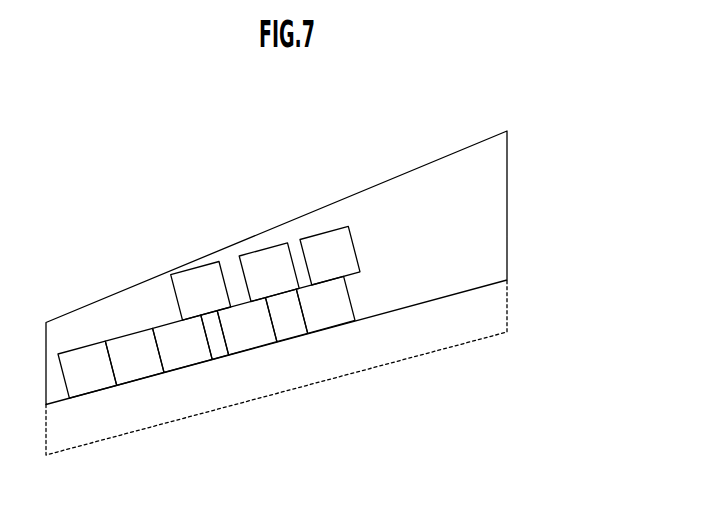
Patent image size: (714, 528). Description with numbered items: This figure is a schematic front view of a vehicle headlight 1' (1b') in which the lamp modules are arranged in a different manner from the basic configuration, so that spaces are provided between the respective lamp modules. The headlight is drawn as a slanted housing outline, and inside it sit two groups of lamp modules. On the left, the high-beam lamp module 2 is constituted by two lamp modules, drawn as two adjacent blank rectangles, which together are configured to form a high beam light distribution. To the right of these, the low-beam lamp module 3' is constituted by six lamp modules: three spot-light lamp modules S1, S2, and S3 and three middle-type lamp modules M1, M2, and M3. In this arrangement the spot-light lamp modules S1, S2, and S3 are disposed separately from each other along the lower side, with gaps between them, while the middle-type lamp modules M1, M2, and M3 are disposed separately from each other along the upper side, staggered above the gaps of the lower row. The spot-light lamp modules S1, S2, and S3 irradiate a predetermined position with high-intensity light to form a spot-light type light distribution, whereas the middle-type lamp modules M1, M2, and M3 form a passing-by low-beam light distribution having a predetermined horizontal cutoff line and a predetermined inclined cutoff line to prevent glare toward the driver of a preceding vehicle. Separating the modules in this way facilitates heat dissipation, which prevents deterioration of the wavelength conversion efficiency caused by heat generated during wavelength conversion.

The vehicle headlight 1' is at (327, 268).
The vehicle headlight 1b' is at (276, 293).
The high-beam lamp module 2 is at (161, 386).
The low-beam lamp module 3' is at (261, 333).
The middle-type lamp module M1 is at (201, 291).
The middle-type lamp module M2 is at (269, 272).
The middle-type lamp module M3 is at (330, 255).
The spot-light lamp module S1 is at (183, 343).
The spot-light lamp module S2 is at (247, 326).
The spot-light lamp module S3 is at (325, 304).